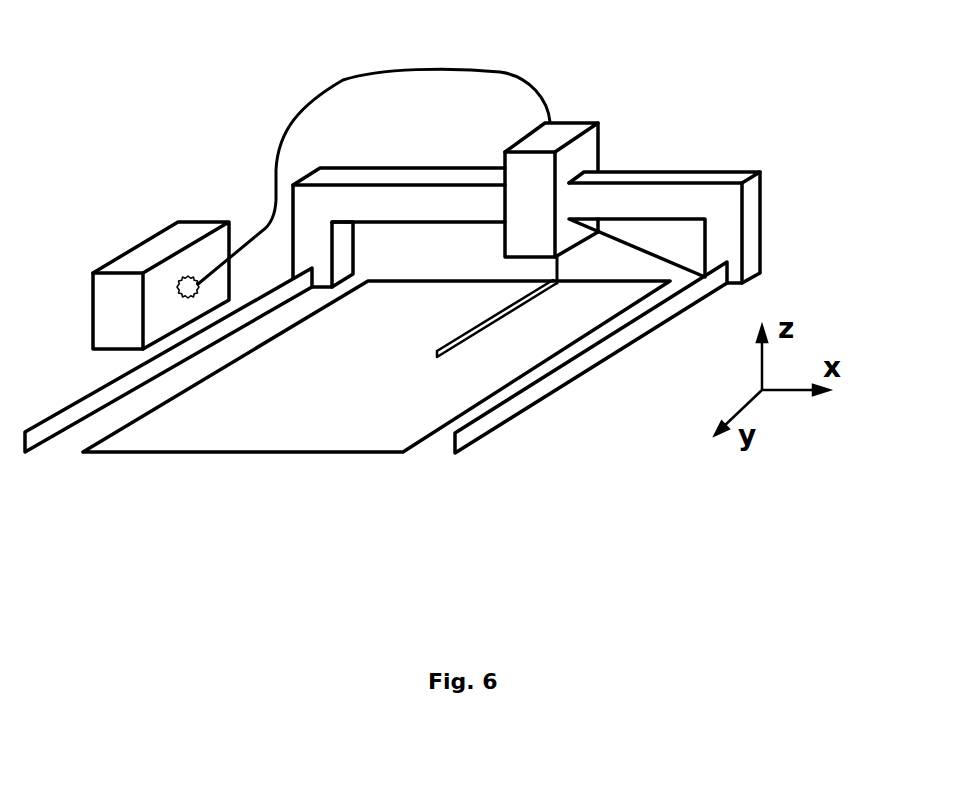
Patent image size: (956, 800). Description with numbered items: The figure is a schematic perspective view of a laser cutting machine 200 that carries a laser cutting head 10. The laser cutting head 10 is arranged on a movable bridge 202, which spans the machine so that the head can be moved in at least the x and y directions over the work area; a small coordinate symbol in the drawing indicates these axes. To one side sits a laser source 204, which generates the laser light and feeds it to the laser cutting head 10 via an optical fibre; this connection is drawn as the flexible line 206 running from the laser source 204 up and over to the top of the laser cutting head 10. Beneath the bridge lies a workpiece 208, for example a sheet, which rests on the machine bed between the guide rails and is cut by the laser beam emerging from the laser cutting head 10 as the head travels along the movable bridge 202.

The laser cutting head 10 is at (600, 147).
The laser cutting machine 200 is at (603, 481).
The movable bridge 202 is at (758, 195).
The laser source 204 is at (155, 250).
The cable 206 is at (538, 88).
The workpiece 208 is at (355, 442).